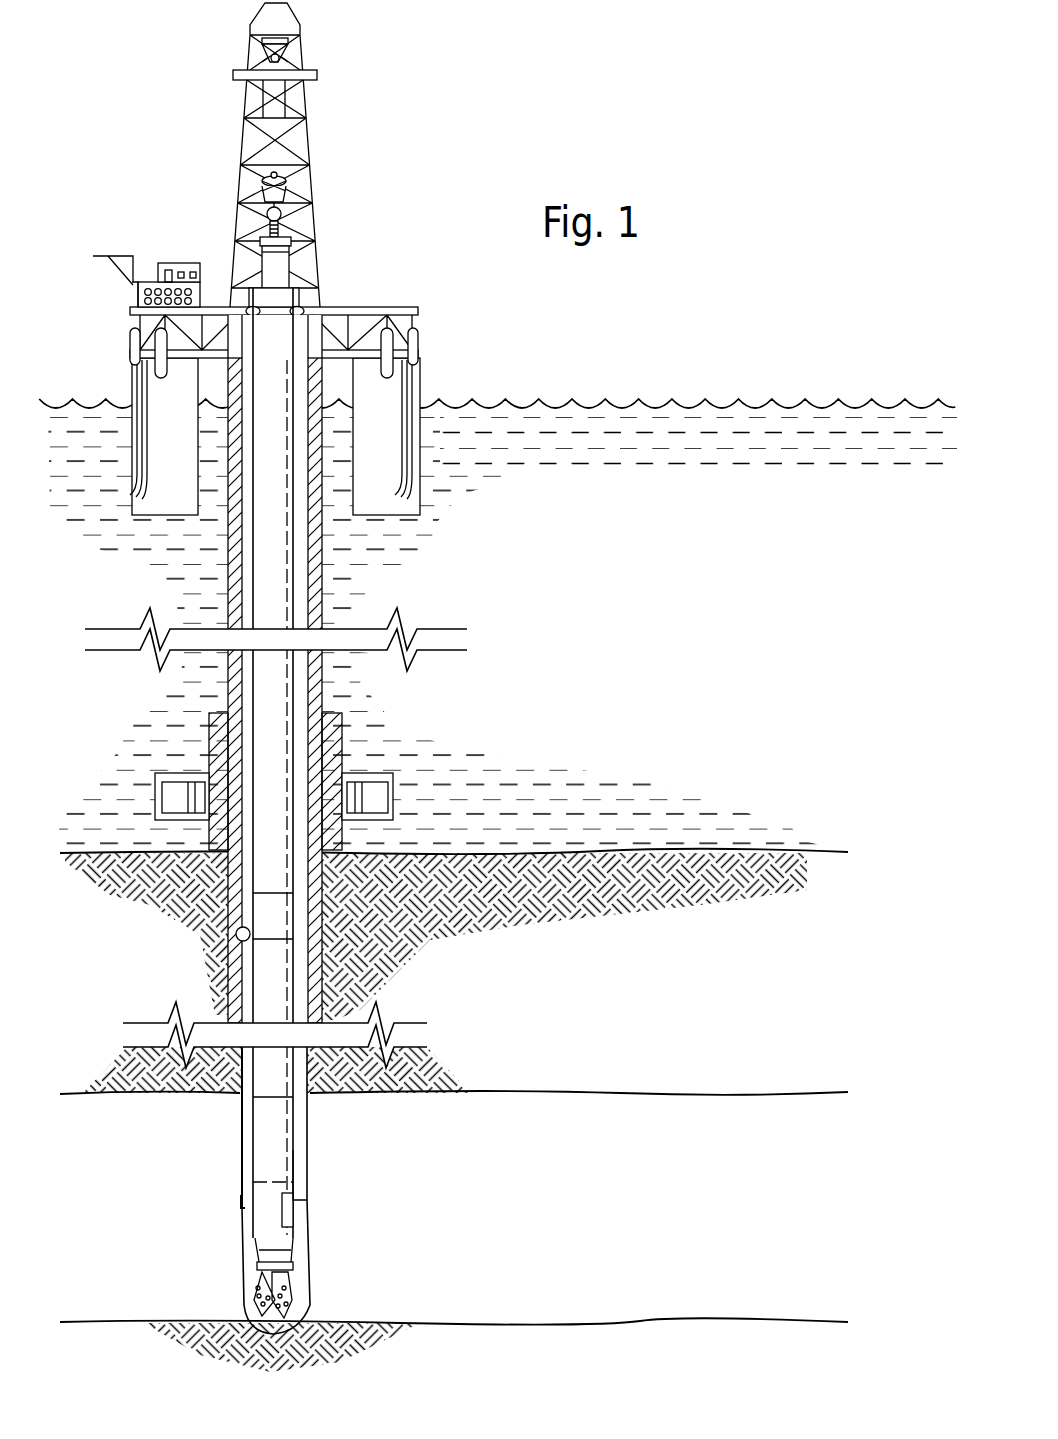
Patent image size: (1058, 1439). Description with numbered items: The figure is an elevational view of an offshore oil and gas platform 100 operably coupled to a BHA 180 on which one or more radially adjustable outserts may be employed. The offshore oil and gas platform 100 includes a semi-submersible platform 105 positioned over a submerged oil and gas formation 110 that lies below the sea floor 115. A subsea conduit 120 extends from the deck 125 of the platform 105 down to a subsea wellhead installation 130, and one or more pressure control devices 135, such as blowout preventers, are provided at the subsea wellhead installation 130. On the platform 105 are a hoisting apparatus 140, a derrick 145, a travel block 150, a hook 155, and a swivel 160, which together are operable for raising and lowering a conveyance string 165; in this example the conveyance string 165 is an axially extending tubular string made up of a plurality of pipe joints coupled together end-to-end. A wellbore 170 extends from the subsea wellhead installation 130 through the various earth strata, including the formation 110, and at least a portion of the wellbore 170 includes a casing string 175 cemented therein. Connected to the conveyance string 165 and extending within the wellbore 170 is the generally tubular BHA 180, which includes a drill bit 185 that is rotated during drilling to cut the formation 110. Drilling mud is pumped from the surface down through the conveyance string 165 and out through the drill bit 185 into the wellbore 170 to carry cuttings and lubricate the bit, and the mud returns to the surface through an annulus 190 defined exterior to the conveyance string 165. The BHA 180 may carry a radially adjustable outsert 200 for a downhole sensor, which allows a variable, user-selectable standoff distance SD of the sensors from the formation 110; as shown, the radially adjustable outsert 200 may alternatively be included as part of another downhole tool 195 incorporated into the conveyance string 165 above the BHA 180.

The offshore oil and gas platform 100 is at (302, 259).
The semi-submersible platform 105 is at (408, 306).
The oil and gas formation 110 is at (460, 1084).
The sea floor 115 is at (832, 850).
The subsea conduit 120 is at (322, 545).
The deck 125 is at (428, 356).
The subsea wellhead installation 130 is at (205, 752).
The pressure control device 135 is at (380, 788).
The hoisting apparatus 140 is at (302, 282).
The derrick 145 is at (248, 50).
The travel block 150 is at (262, 195).
The hook 155 is at (262, 217).
The swivel 160 is at (290, 242).
The conveyance string 165 is at (288, 978).
The wellbore 170 is at (304, 1110).
The casing string 175 is at (238, 932).
The BHA 180 is at (244, 1204).
The drill bit 185 is at (292, 1290).
The annulus 190 is at (242, 1148).
The downhole tool 195 is at (283, 1148).
The radially adjustable outsert 200 is at (282, 1213).
The standoff distance SD is at (302, 1206).